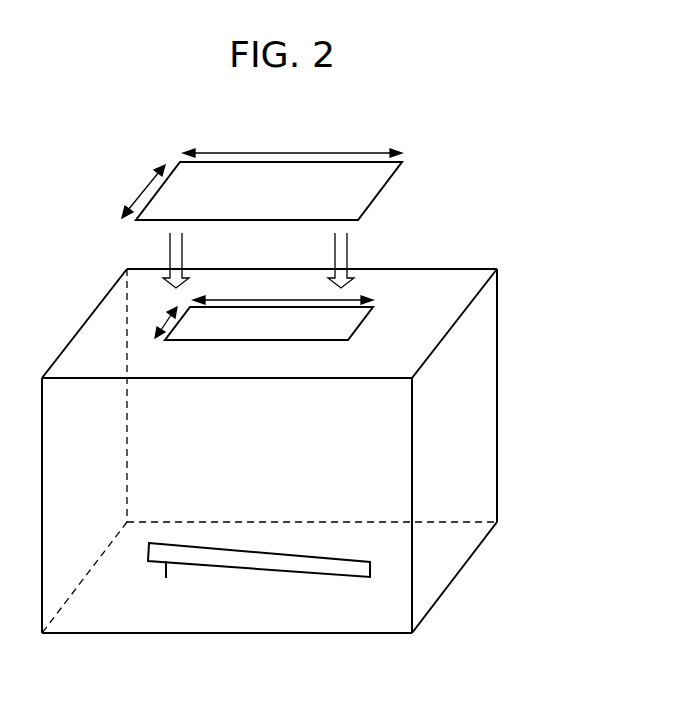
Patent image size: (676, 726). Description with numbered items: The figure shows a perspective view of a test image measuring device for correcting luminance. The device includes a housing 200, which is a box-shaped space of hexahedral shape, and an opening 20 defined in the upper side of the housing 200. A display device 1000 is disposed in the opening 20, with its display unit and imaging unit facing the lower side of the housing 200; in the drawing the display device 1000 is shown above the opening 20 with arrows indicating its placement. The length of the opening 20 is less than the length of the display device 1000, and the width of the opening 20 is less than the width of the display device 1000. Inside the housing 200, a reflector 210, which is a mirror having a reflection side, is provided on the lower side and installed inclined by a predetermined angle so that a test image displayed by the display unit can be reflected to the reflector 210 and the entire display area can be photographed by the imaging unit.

The display device 1000 is at (392, 178).
The housing 200 is at (448, 269).
The opening 20 is at (363, 323).
The reflector 210 is at (303, 567).